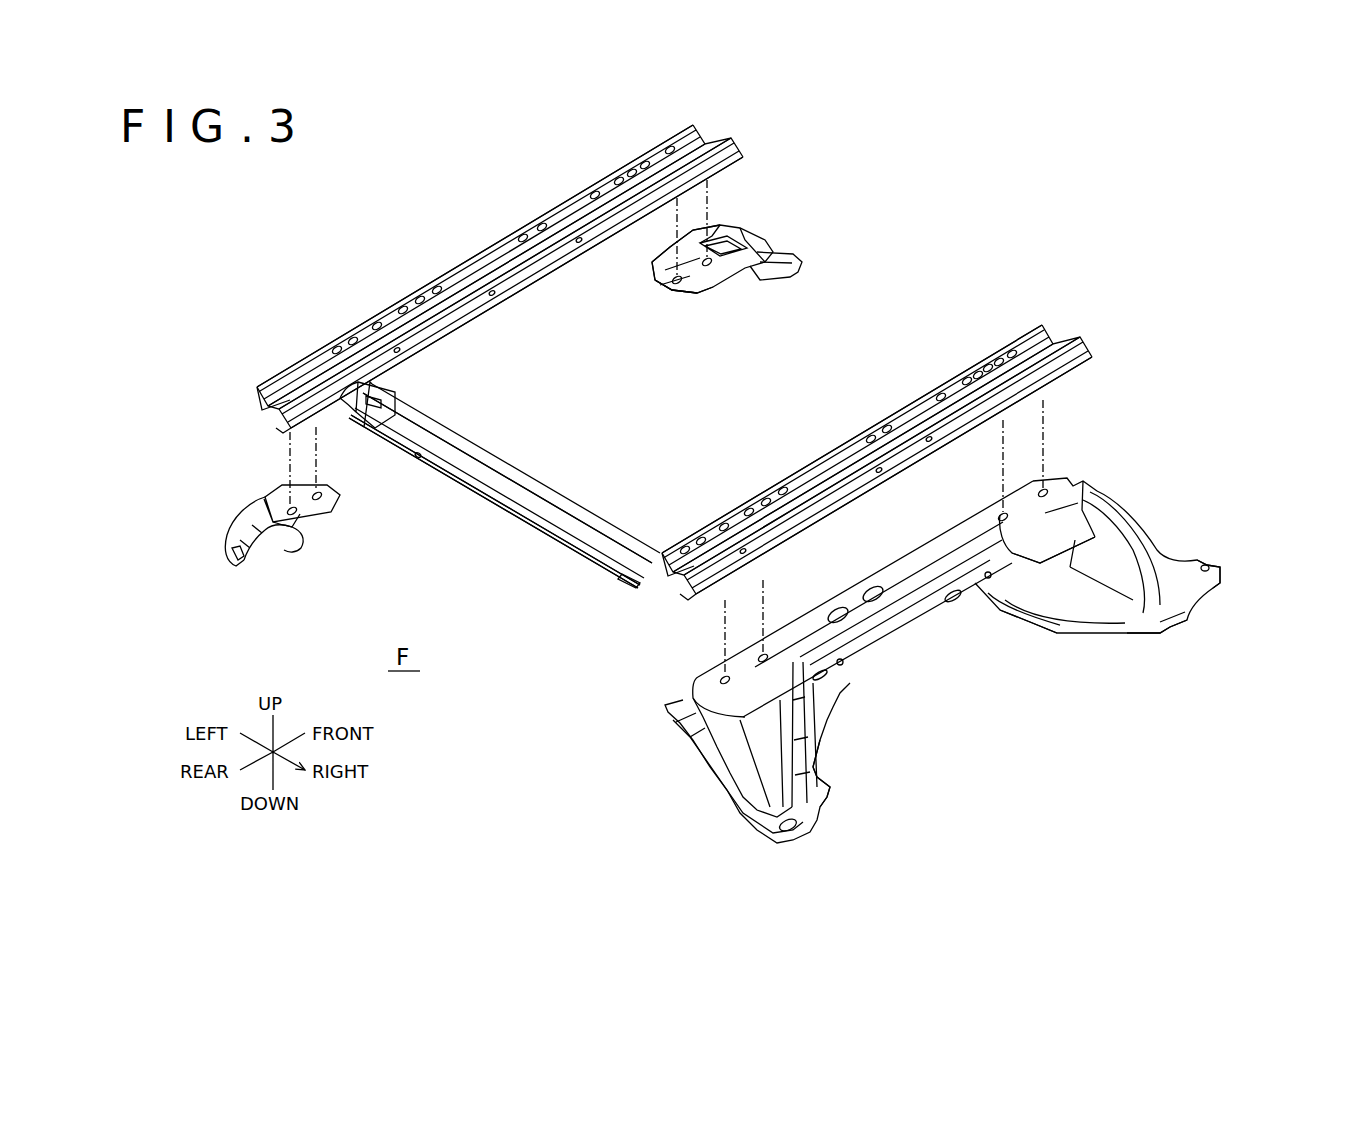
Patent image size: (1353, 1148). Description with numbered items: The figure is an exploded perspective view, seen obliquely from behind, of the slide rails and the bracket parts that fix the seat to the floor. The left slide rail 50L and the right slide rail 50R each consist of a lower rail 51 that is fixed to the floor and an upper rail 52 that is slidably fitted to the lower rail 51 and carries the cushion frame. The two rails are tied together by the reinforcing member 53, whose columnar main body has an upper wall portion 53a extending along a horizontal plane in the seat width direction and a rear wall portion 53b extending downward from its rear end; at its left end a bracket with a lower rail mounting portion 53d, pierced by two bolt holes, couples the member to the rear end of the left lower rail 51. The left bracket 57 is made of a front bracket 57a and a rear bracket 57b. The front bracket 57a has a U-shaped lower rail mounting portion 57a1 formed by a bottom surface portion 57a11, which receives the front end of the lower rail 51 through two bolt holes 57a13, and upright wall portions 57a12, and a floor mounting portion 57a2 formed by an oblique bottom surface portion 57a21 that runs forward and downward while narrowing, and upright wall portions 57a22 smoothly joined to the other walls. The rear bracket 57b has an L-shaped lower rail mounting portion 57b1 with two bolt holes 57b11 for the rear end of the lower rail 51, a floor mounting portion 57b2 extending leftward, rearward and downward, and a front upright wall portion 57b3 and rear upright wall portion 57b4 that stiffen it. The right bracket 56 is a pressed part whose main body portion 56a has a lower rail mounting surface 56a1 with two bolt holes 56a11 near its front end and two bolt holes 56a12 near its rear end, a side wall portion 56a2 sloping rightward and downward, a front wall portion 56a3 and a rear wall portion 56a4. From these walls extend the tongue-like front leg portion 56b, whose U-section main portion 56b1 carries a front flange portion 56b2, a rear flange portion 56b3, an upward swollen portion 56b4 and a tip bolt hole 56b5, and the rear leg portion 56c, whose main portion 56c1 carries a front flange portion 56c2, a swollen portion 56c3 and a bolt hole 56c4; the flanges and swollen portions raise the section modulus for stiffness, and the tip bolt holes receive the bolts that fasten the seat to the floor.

The left slide rail 50L is at (345, 258).
The right slide rail 50R is at (755, 436).
The lower rail 51 is at (290, 366).
The upper rail 52 is at (345, 368).
The reinforcing member 53 is at (500, 494).
The upper wall portion 53a is at (478, 460).
The rear wall portion 53b is at (542, 538).
The lower rail mounting portion 53d is at (378, 386).
The left bracket 57 is at (564, 390).
The front bracket 57a is at (770, 268).
The lower rail mounting portion 57a1 is at (699, 305).
The bottom surface portion 57a11 is at (678, 296).
The upright wall portions 57a12 is at (658, 262).
The bolt holes 57a13 is at (662, 288).
The floor mounting portion 57a2 is at (843, 215).
The oblique bottom surface portion 57a21 is at (767, 240).
The upright wall portions 57a22 is at (705, 238).
The rear bracket 57b is at (283, 528).
The lower rail mounting portion 57b1 is at (301, 492).
The bolt holes 57b11 is at (254, 481).
The floor mounting portion 57b2 is at (268, 546).
The front upright wall portion 57b3 is at (290, 530).
The rear upright wall portion 57b4 is at (258, 557).
The right bracket 56 is at (883, 637).
The main body portion 56a is at (879, 562).
The lower rail mounting surface 56a1 is at (901, 577).
The side wall portion 56a2 is at (897, 627).
The front wall portion 56a3 is at (1125, 481).
The rear wall portion 56a4 is at (637, 652).
The bolt holes 56a11 is at (1006, 514).
The bolt holes 56a12 is at (758, 655).
The front leg portion 56b is at (1118, 588).
The main portion 56b1 is at (1197, 612).
The front flange portion 56b2 is at (1150, 530).
The rear flange portion 56b3 is at (1067, 635).
The swollen portion 56b4 is at (1070, 567).
The bolt hole 56b5 is at (1203, 600).
The rear leg portion 56c is at (776, 768).
The main portion 56c1 is at (803, 833).
The front flange portion 56c2 is at (830, 757).
The swollen portion 56c3 is at (747, 770).
The bolt hole 56c4 is at (822, 812).